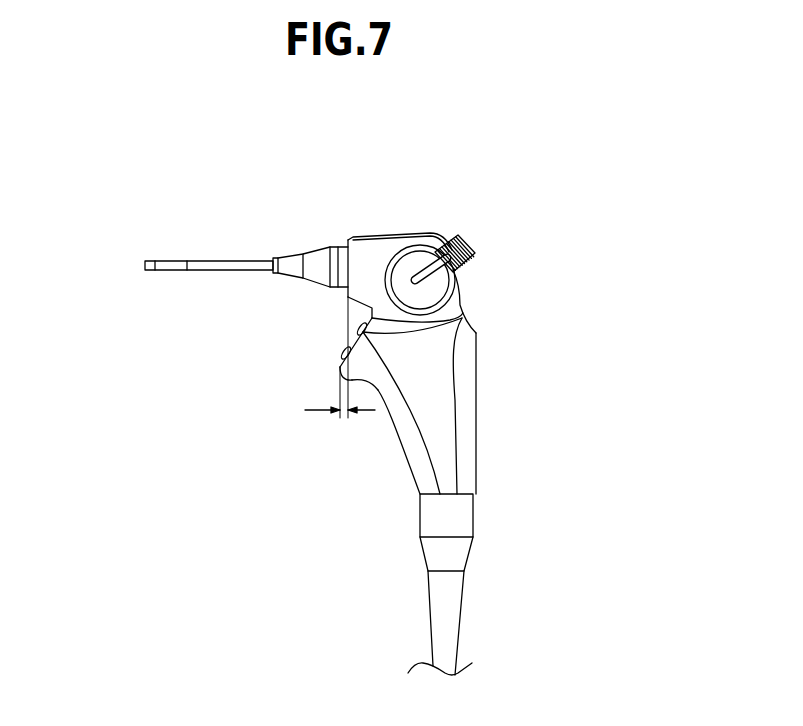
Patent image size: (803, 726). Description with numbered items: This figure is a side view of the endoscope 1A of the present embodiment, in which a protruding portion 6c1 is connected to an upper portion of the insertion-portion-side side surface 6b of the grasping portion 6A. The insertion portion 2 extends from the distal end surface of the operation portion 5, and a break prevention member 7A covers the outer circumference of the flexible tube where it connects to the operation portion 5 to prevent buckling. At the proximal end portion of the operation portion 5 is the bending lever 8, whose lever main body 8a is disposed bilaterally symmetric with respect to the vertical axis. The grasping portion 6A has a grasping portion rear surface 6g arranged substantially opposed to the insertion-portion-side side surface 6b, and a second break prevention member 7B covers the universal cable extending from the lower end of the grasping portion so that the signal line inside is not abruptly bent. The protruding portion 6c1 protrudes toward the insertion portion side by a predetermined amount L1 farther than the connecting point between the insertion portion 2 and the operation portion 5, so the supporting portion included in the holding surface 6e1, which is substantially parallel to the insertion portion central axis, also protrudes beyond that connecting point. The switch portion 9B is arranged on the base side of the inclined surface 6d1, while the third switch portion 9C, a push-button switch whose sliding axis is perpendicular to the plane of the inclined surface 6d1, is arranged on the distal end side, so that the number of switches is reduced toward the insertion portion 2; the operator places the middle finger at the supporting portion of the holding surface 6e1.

The endoscope 1A is at (268, 250).
The insertion portion 2 is at (193, 252).
The break prevention member 7A is at (312, 250).
The operation portion 5 is at (370, 253).
The bending lever 8 is at (413, 255).
The lever main body 8a is at (457, 237).
The grasping portion 6A is at (440, 378).
The grasping portion rear surface 6g is at (478, 417).
The insertion-portion-side side surface 6b is at (400, 452).
The protruding portion 6c1 is at (263, 482).
The inclined surface 6d1 is at (335, 363).
The holding surface 6e1 is at (350, 377).
The switch portion 9B is at (367, 325).
The third switch portion 9C is at (343, 353).
The predetermined amount L1 is at (340, 357).
The break prevention member 7B is at (418, 582).